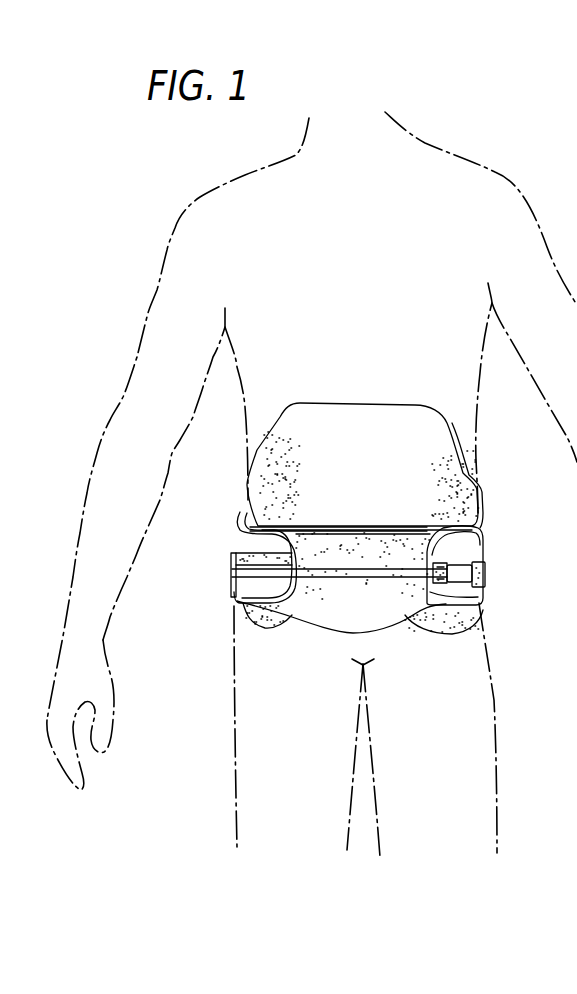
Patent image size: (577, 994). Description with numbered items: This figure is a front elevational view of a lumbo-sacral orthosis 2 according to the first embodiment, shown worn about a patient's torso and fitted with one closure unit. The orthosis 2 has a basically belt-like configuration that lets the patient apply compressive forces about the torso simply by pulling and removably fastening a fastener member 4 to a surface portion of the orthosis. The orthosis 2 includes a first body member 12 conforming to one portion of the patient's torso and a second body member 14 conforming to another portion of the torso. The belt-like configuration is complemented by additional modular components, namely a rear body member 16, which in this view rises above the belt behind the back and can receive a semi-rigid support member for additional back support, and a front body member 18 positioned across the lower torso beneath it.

The lumbo-sacral orthosis 2 is at (370, 486).
The fastener member 4 is at (459, 575).
The first body member 12 is at (470, 551).
The second body member 14 is at (253, 588).
The rear body member 16 is at (413, 420).
The front body member 18 is at (386, 541).